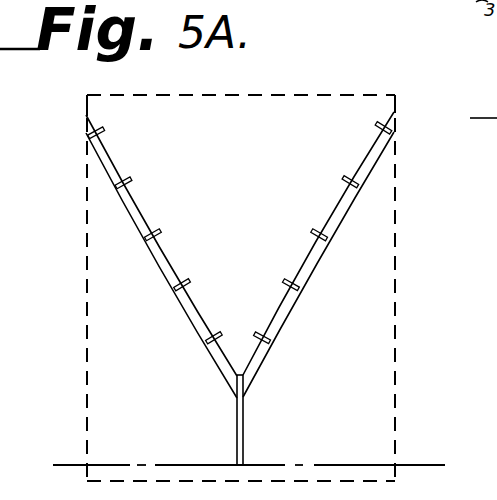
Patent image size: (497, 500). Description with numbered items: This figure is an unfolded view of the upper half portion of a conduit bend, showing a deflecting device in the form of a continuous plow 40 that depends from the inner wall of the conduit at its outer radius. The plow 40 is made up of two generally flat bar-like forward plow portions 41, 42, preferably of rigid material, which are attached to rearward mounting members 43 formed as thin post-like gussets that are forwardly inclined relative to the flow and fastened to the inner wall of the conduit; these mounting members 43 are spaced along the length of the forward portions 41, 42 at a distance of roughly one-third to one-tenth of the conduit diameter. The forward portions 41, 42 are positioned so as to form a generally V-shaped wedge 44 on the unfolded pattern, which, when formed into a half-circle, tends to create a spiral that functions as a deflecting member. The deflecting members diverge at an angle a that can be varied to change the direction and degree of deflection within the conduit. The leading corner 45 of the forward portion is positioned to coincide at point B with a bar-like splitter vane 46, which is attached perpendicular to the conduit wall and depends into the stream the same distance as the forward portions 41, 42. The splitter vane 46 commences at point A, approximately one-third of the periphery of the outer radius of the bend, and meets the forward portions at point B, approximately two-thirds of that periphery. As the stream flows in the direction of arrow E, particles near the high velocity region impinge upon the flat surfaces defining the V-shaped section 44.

The plow 40 is at (270, 288).
The bar-like forward plow portion 41 is at (164, 280).
The bar-like forward plow portion 42 is at (342, 222).
The rearward mounting members 43 is at (133, 182).
The V-shaped wedge 44 is at (328, 282).
The leading corner 45 is at (250, 384).
The bar-like splitter vane 46 is at (246, 419).
The angle of divergence a is at (292, 270).
The point A is at (234, 462).
The point B is at (234, 402).
The arrow E is at (356, 356).